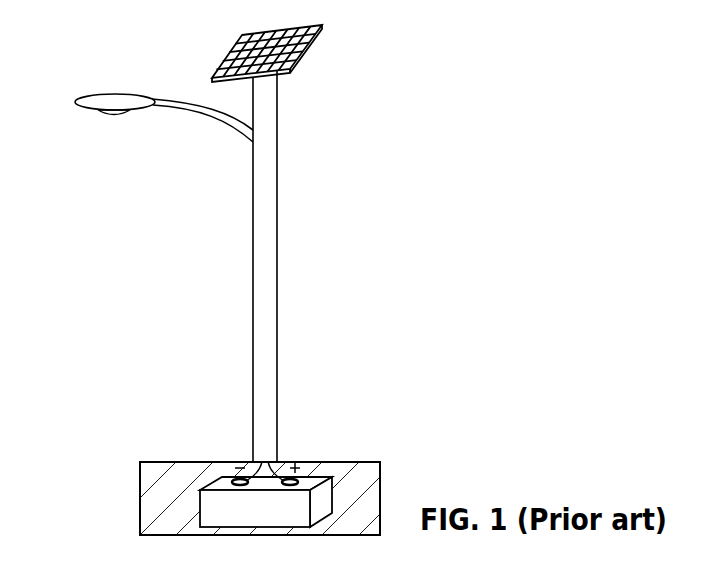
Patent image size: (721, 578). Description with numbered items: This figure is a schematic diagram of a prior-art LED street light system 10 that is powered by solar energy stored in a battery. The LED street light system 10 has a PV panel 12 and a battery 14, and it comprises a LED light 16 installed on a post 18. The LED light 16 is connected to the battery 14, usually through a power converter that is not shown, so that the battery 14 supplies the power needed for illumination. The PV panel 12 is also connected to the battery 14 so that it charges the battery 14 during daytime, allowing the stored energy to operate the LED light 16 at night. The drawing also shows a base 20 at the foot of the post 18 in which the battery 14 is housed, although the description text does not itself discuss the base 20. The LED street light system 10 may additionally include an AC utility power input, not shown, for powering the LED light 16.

The LED street light system 10 is at (66, 64).
The PV panel 12 is at (218, 63).
The battery 14 is at (213, 480).
The LED light 16 is at (115, 117).
The post 18 is at (253, 262).
The base / ground foundation 20 is at (158, 462).